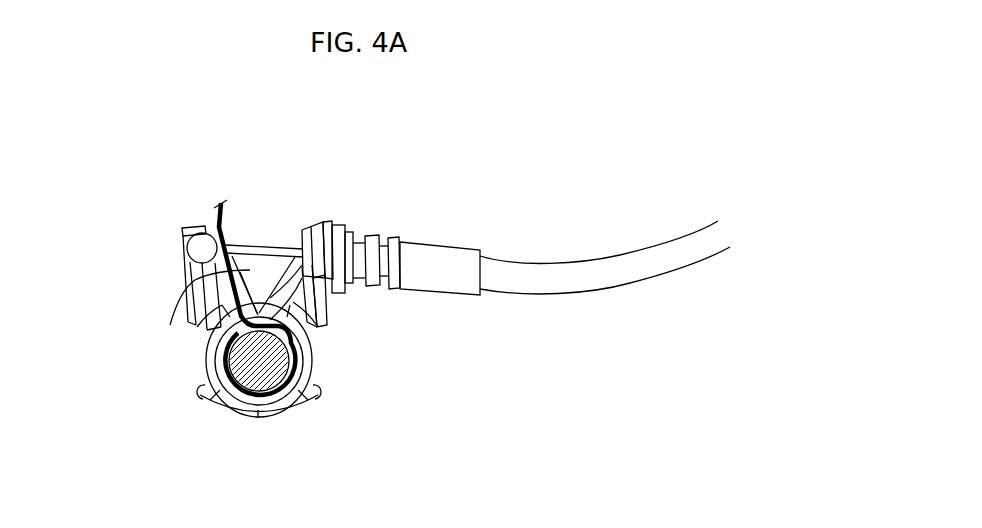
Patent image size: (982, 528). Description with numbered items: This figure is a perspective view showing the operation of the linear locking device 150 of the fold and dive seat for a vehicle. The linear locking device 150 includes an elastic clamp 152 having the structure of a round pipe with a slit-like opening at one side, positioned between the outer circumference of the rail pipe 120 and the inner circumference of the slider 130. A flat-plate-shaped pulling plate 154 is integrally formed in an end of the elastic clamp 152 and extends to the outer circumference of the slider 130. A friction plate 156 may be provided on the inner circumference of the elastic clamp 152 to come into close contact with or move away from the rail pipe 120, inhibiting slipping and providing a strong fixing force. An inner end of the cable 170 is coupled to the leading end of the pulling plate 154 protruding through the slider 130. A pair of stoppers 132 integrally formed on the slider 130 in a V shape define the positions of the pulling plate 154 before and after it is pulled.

The rail pipe 120 is at (290, 402).
The slider 130 is at (340, 356).
The stoppers 132 is at (200, 224).
The linear locking device 150 is at (157, 487).
The elastic clamp 152 is at (221, 377).
The pulling plate 154 is at (183, 284).
The friction plate 156 is at (236, 390).
The cable 170 is at (528, 273).